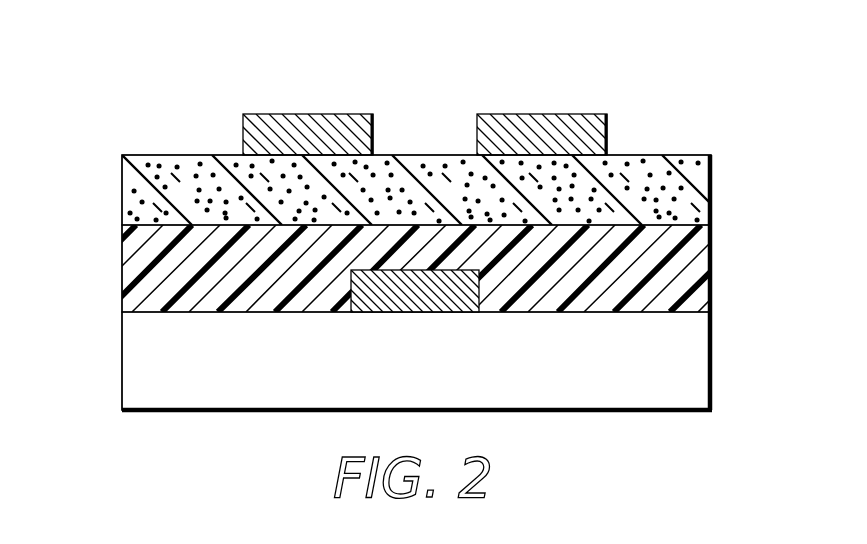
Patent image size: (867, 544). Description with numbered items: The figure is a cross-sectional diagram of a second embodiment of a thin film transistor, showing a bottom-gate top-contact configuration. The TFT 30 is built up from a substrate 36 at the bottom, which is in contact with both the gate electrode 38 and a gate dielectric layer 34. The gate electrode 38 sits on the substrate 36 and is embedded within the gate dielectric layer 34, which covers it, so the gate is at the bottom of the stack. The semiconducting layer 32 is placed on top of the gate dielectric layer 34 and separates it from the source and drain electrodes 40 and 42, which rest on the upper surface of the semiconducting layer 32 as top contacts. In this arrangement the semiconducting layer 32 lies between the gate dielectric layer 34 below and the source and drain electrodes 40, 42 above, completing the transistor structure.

The TFT 30 is at (153, 67).
The semiconducting layer 32 is at (700, 190).
The gate dielectric layer 34 is at (112, 225).
The substrate 36 is at (702, 360).
The gate electrode 38 is at (432, 304).
The source electrode 40 is at (313, 114).
The drain electrode 42 is at (538, 114).